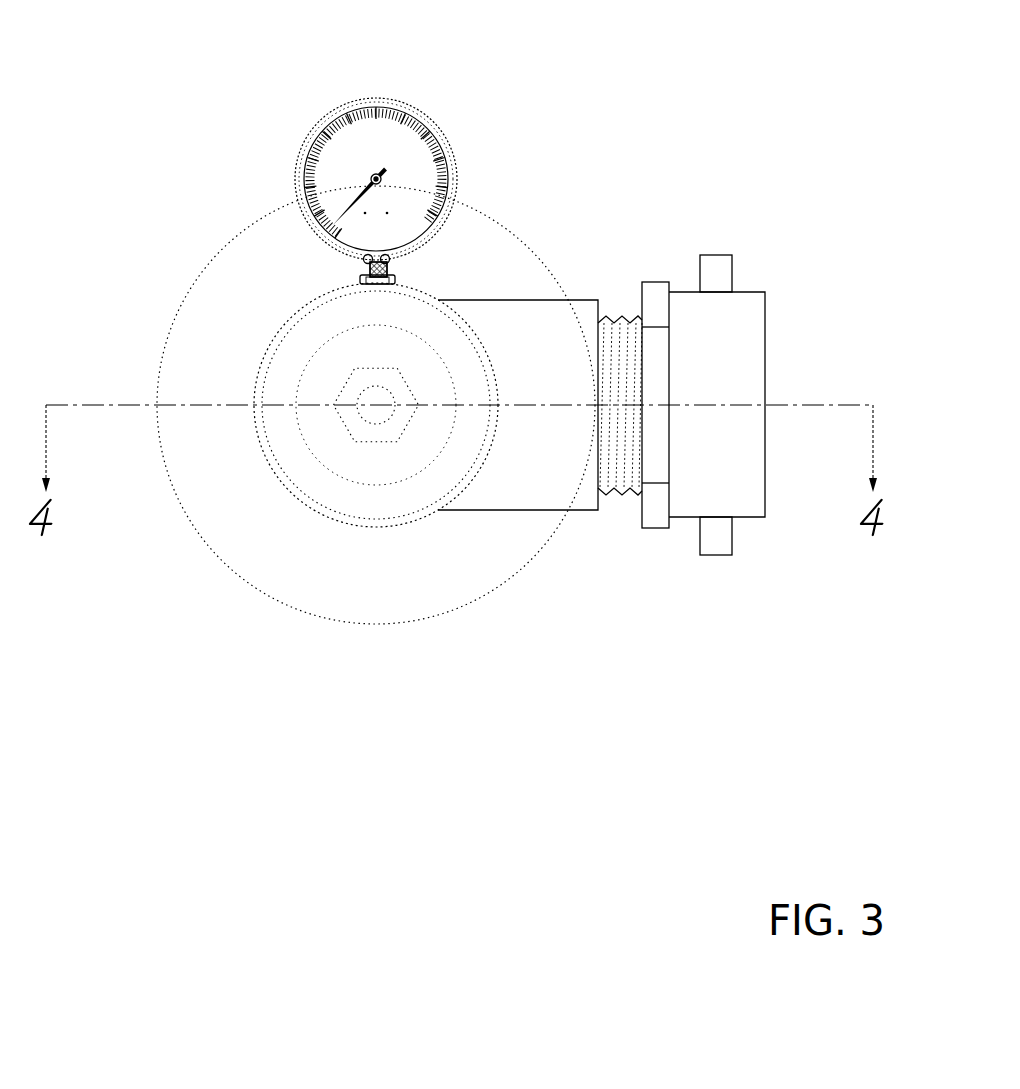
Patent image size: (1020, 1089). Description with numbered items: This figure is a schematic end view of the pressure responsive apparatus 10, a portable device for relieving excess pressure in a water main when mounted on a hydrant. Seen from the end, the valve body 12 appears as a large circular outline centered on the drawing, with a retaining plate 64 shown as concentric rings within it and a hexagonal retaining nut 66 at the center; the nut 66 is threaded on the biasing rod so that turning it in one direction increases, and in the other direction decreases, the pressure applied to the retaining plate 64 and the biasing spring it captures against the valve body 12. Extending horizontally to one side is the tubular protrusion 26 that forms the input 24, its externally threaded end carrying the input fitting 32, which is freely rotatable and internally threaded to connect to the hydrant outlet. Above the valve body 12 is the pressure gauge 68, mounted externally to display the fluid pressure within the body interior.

The pressure responsive apparatus 10 is at (614, 87).
The valve body 12 is at (433, 580).
The input 24 is at (738, 584).
The tubular protrusion 26 is at (512, 298).
The input fitting 32 is at (766, 310).
The retaining plate 64 is at (323, 490).
The retaining nut 66 is at (343, 425).
The pressure gauge 68 is at (431, 121).